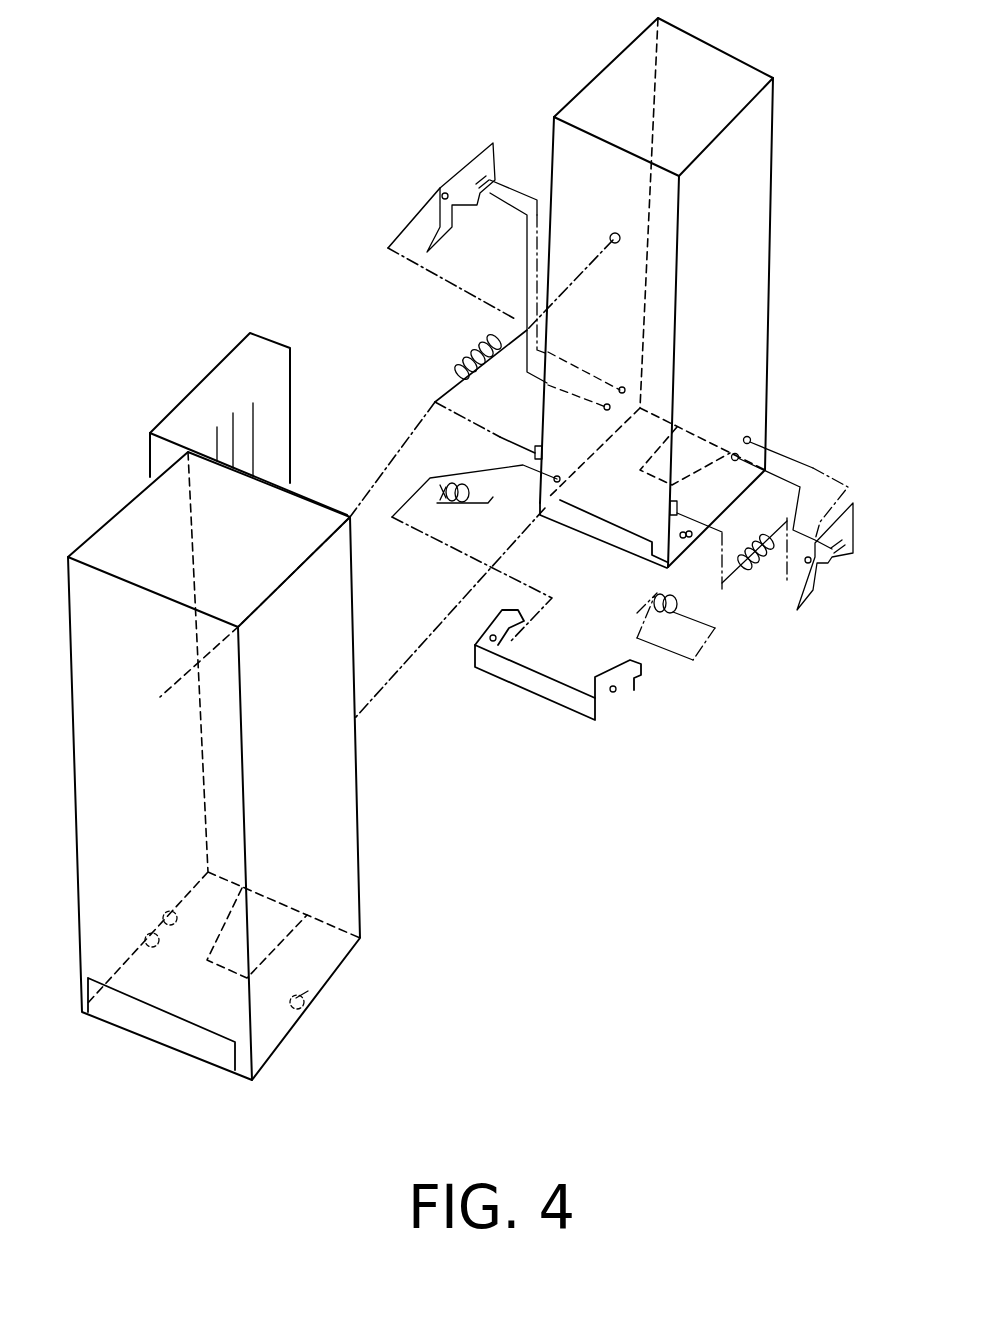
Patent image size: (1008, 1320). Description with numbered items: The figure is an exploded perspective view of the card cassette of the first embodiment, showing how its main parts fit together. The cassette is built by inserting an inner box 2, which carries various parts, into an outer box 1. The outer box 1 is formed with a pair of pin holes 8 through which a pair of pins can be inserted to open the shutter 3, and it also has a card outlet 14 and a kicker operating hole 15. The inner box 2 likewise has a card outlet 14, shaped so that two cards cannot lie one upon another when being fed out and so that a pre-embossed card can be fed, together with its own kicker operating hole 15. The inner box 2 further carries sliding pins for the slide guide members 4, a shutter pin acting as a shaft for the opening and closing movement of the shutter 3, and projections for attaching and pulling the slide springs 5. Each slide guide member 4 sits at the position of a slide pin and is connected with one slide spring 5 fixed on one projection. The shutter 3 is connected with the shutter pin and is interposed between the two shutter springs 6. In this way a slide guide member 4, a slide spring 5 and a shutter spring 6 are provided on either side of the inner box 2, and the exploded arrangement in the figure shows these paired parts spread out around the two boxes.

The outer box 1 is at (348, 868).
The inner box 2 is at (757, 248).
The shutter 3 is at (572, 697).
The slide guide member 4 is at (468, 172).
The slide spring 5 is at (468, 352).
The shutter spring 6 is at (455, 485).
The pin hole 8 is at (152, 948).
The card outlet 14 is at (203, 1048).
The kicker operating hole 15 is at (277, 915).